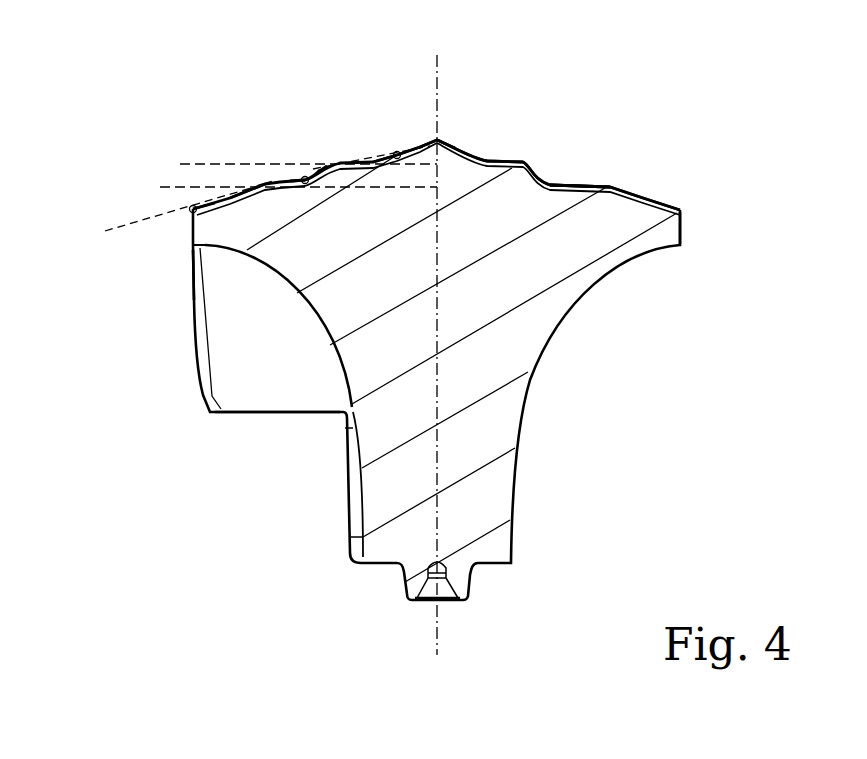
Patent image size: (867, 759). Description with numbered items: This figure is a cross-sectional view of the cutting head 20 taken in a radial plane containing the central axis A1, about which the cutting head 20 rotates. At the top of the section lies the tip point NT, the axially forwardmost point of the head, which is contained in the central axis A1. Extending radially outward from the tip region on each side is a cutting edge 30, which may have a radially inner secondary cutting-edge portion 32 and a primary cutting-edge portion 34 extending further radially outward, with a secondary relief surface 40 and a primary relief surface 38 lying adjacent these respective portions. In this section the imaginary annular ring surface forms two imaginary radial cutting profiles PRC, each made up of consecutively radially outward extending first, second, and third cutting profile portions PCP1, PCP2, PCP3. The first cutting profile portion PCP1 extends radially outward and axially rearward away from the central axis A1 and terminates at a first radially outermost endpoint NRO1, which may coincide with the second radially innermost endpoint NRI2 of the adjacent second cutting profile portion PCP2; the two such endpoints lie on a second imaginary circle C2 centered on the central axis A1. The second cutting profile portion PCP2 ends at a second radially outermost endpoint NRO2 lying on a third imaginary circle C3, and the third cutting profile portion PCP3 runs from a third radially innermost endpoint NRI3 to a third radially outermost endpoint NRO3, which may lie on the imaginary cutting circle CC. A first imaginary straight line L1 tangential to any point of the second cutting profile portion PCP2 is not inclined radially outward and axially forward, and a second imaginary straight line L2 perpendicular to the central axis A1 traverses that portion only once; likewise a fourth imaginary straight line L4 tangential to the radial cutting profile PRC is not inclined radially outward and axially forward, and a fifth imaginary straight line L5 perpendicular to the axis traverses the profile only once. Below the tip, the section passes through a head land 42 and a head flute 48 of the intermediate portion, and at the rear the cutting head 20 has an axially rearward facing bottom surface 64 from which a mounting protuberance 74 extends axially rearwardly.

The cutting head 20 is at (580, 331).
The cutting edge 30 is at (549, 181).
The secondary cutting-edge portion 32 is at (524, 161).
The primary cutting-edge portion 34 is at (611, 187).
The primary relief surface 38 is at (646, 199).
The secondary relief surface 40 is at (497, 162).
The head land 42 is at (191, 338).
The head flute 48 is at (262, 346).
The bottom surface 64 is at (266, 415).
The mounting protuberance 74 is at (342, 487).
The central axis A1 is at (438, 352).
The first imaginary straight line L1 is at (304, 177).
The second imaginary straight line L2 is at (310, 165).
The fourth imaginary straight line L4 is at (292, 172).
The fifth imaginary straight line L5 is at (298, 186).
The tip point NT is at (436, 138).
The imaginary radial cutting profile PRC is at (266, 183).
The first cutting profile portion PCP1 is at (401, 144).
The second cutting profile portion PCP2 is at (322, 162).
The third cutting profile portion PCP3 is at (265, 176).
The second radially innermost endpoint NRI2 is at (417, 190).
The first radially outermost endpoint NRO1 is at (417, 190).
The second imaginary circle C2 is at (396, 158).
The third radially innermost endpoint NRI3 is at (355, 221).
The second radially outermost endpoint NRO2 is at (355, 221).
The third imaginary circle C3 is at (307, 183).
The third radially outermost endpoint NRO3 is at (126, 258).
The imaginary cutting circle CC is at (191, 211).